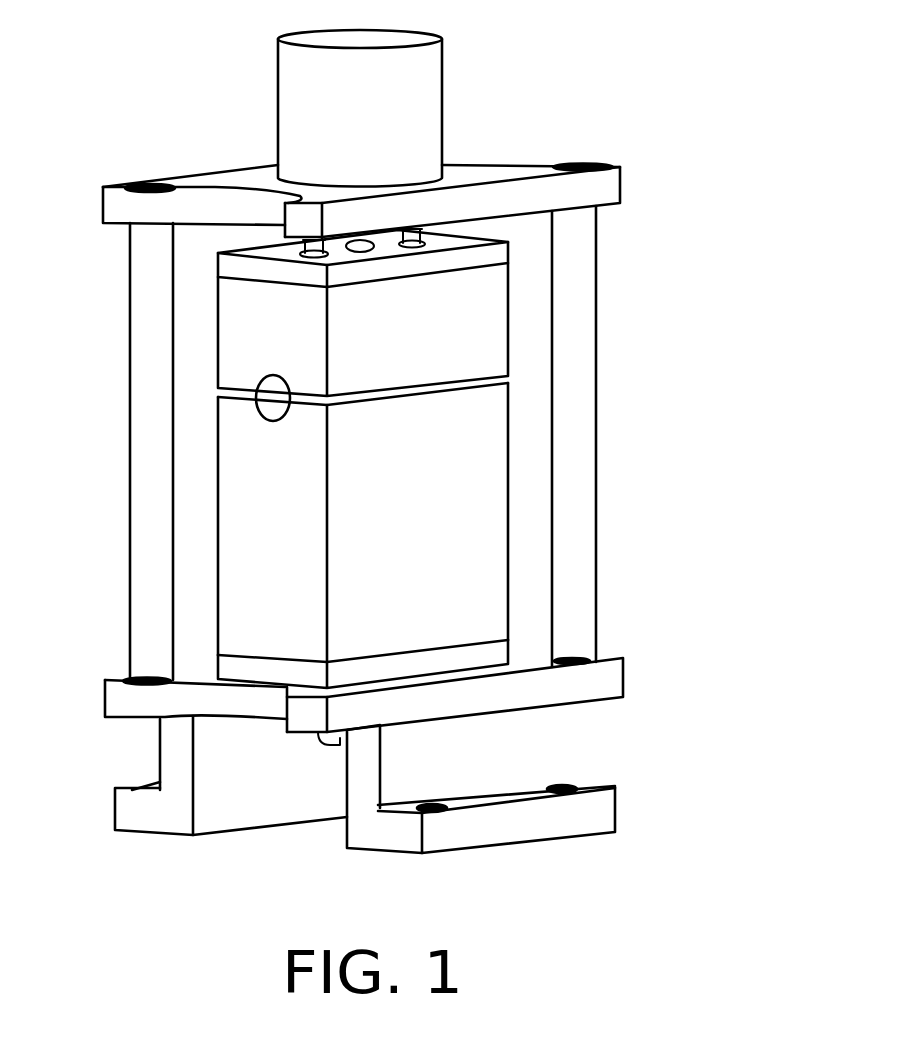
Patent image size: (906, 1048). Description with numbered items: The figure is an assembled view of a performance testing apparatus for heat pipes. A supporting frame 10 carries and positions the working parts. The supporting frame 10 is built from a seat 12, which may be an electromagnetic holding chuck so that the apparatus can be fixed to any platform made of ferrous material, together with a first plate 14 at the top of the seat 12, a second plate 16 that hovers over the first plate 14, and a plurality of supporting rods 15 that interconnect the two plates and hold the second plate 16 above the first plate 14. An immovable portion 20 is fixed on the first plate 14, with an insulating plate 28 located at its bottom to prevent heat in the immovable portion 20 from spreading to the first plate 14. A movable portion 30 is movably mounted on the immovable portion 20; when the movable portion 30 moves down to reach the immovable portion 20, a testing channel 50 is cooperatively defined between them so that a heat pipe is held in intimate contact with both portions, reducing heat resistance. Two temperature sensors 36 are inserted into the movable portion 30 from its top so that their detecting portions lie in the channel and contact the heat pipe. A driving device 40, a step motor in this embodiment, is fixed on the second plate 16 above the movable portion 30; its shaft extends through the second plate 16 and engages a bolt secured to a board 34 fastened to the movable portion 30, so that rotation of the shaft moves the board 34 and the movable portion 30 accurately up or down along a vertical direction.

The supporting frame 10 is at (416, 441).
The seat 12 is at (424, 784).
The first plate 14 is at (608, 683).
The supporting rods 15 is at (578, 349).
The second plate 16 is at (590, 190).
The immovable portion 20 is at (260, 522).
The insulating plate 28 is at (233, 665).
The movable portion 30 is at (240, 337).
The board 34 is at (227, 266).
The temperature sensors 36 is at (300, 241).
The driving device 40 is at (422, 107).
The testing channel 50 is at (270, 404).